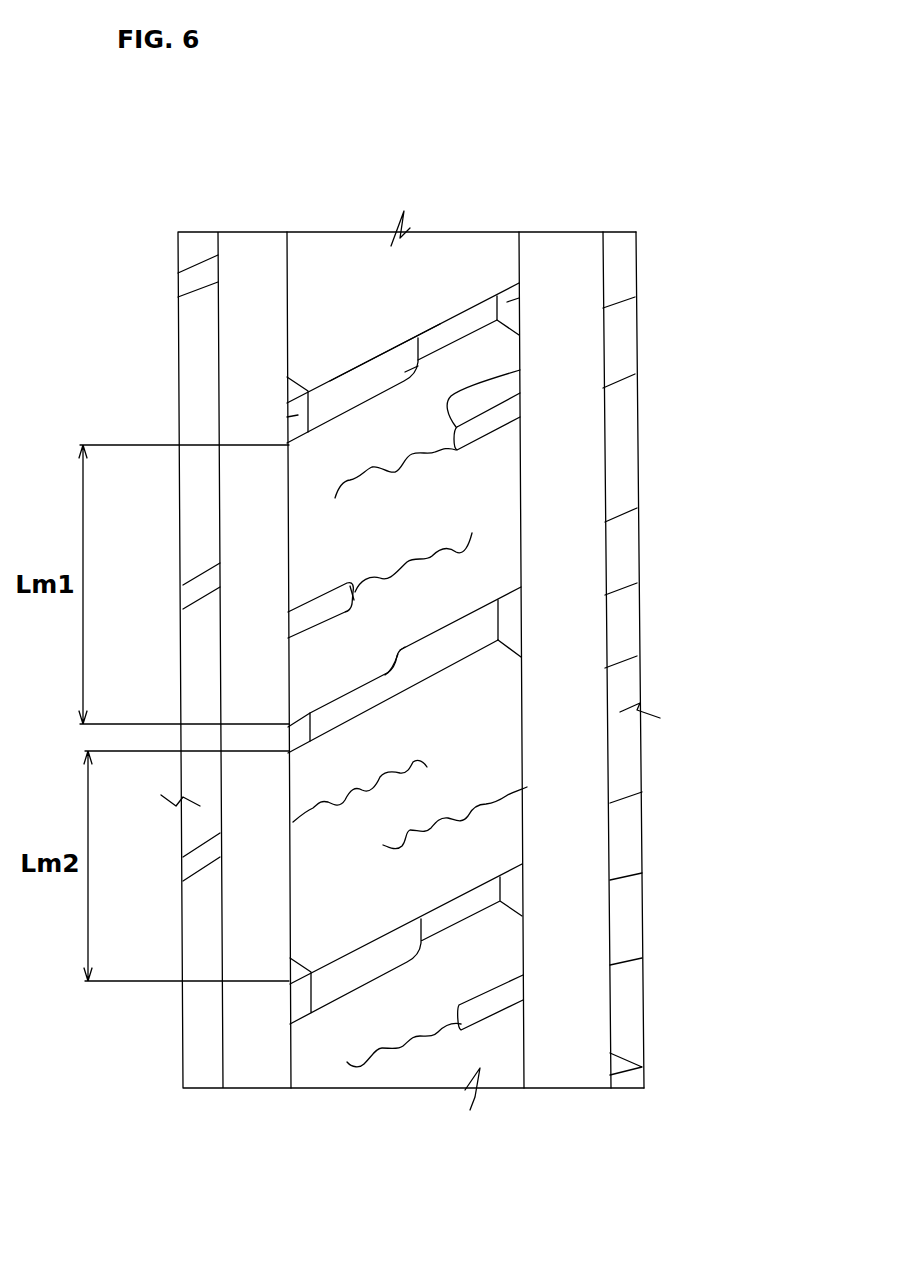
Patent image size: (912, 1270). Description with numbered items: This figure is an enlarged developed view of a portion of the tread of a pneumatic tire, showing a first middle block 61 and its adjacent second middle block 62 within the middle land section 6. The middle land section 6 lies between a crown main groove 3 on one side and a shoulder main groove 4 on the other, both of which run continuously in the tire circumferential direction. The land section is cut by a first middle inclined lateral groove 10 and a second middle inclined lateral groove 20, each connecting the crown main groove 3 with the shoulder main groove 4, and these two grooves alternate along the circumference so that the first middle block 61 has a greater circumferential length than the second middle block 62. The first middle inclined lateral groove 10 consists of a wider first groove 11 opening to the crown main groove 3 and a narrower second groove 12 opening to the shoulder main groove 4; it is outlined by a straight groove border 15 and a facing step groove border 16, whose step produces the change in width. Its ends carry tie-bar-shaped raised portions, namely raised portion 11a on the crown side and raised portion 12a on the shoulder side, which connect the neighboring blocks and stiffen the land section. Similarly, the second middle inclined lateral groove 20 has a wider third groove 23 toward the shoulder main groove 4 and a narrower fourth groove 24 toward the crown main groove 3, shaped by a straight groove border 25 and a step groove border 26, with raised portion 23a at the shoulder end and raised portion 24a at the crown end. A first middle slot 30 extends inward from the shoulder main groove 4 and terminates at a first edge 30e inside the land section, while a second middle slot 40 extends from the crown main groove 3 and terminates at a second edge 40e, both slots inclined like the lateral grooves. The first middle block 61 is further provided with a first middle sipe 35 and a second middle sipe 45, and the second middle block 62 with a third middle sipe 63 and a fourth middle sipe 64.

The crown main groove 3 is at (250, 368).
The shoulder main groove 4 is at (573, 274).
The middle land section 6 is at (472, 257).
The first middle inclined lateral groove 10 is at (380, 363).
The first groove 11 is at (338, 383).
The raised portion 11a is at (297, 416).
The second groove 12 is at (480, 315).
The raised portion 12a is at (520, 300).
The straight groove border 15 is at (448, 330).
The step groove border 16 is at (420, 373).
The second middle inclined lateral groove 20 is at (430, 665).
The third groove 23 is at (467, 628).
The raised portion 23a is at (510, 610).
The fourth groove 24 is at (342, 713).
The raised portion 24a is at (302, 740).
The straight groove border 25 is at (373, 708).
The step groove border 26 is at (397, 653).
The first middle slot 30 is at (497, 420).
The first edge 30e is at (520, 370).
The first middle sipe 35 is at (400, 470).
The second middle slot 40 is at (325, 607).
The second edge 40e is at (357, 590).
The second middle sipe 45 is at (460, 523).
The first middle block 61 is at (457, 503).
The second middle block 62 is at (353, 877).
The third middle sipe 63 is at (377, 787).
The fourth middle sipe 64 is at (405, 843).